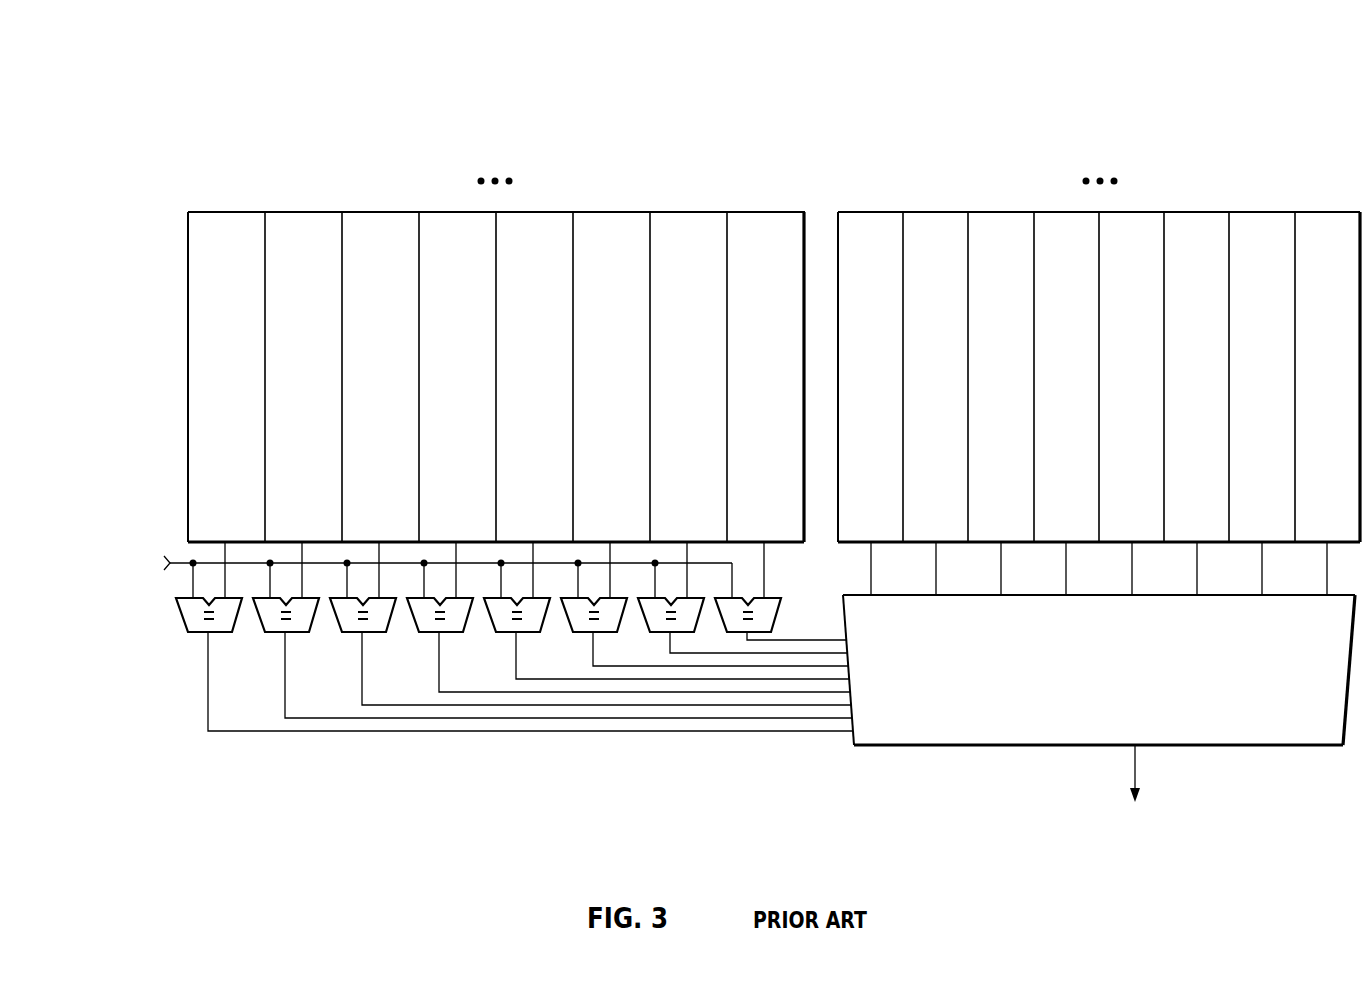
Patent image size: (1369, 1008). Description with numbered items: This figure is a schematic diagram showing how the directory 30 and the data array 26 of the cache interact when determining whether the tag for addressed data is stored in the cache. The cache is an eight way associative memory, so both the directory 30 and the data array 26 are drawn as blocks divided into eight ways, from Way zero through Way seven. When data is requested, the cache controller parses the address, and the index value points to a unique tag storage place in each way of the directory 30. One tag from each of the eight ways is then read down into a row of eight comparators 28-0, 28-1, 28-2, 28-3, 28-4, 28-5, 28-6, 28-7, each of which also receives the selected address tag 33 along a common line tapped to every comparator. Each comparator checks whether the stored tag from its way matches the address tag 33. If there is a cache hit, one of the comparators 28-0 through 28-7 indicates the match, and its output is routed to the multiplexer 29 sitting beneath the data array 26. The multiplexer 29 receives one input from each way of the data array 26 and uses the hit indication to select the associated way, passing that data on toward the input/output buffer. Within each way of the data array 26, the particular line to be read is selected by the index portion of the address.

The directory 30 is at (727, 128).
The data array 26 is at (1297, 128).
The address tag input 33 is at (150, 519).
The comparator 28-0 is at (197, 633).
The comparator 28-1 is at (274, 633).
The comparator 28-2 is at (351, 633).
The comparator 28-3 is at (428, 633).
The comparator 28-4 is at (490, 633).
The comparator 28-5 is at (566, 633).
The comparator 28-6 is at (662, 633).
The comparator 28-7 is at (778, 612).
The multiplexer 29 is at (988, 722).